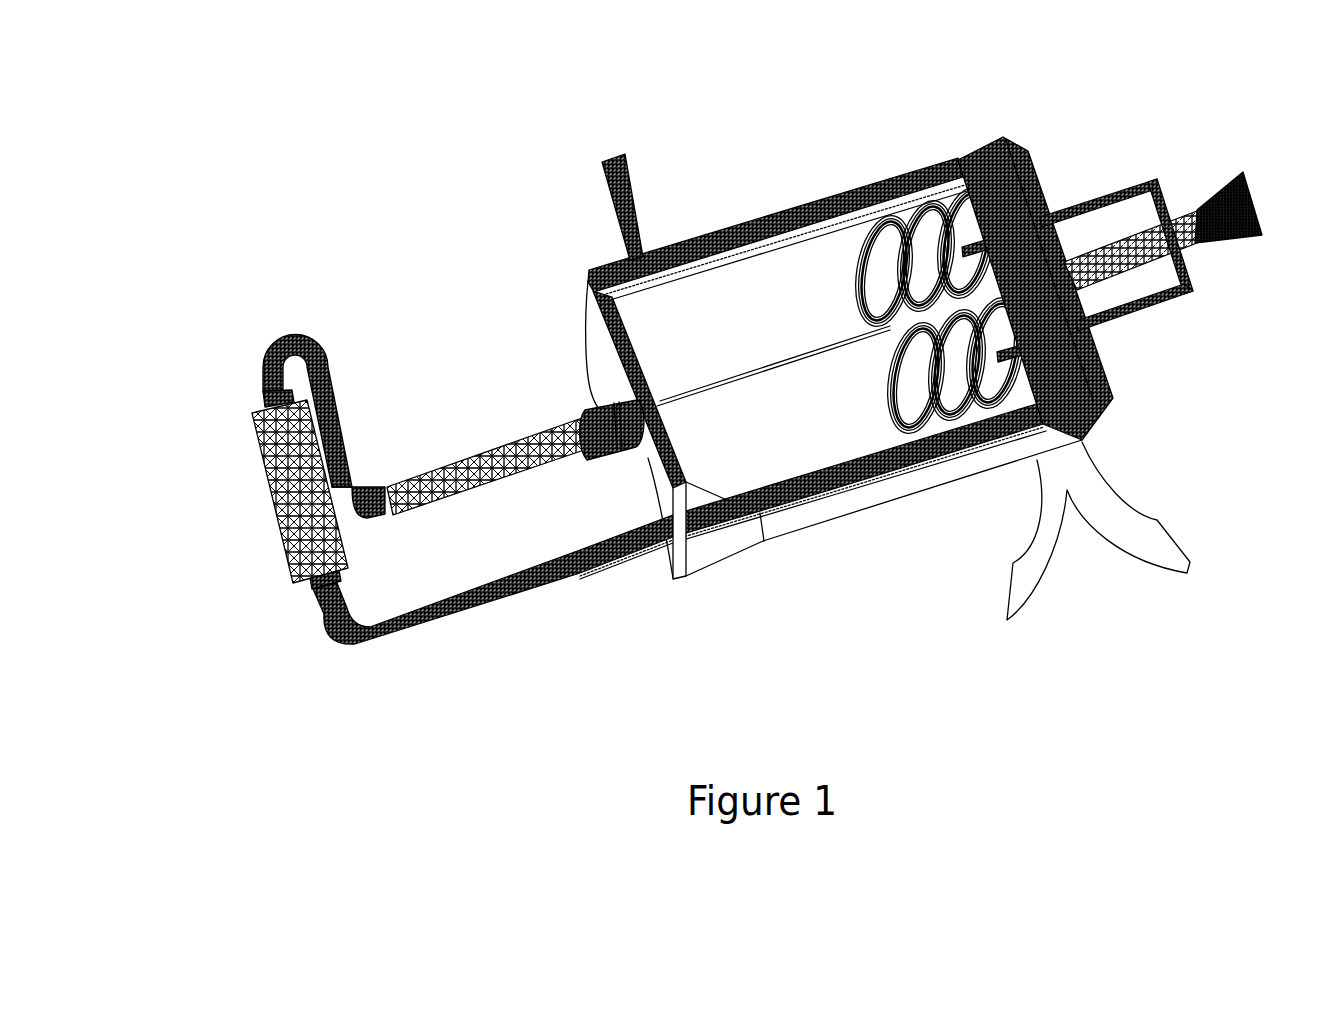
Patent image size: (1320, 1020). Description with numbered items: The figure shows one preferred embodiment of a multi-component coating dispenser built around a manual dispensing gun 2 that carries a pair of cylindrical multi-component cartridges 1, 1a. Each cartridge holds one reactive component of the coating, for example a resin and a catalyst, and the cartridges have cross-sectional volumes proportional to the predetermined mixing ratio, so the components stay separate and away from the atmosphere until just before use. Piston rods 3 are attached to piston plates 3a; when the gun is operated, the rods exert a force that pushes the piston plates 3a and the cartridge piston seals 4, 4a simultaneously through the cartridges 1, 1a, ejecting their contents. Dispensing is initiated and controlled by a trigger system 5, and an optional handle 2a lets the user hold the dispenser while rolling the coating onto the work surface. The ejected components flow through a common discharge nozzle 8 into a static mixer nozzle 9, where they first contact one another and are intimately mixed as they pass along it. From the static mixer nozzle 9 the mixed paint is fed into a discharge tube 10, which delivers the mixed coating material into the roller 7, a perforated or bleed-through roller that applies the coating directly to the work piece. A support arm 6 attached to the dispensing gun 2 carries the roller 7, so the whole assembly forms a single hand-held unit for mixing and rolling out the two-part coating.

The multi-component cartridge 1 is at (698, 452).
The multi-component cartridge 1a is at (629, 429).
The manual dispensing gun 2 is at (1010, 183).
The handle 2a is at (597, 190).
The piston rods 3 is at (1117, 298).
The piston plates 3a is at (942, 177).
The cartridge piston seal 4 is at (885, 356).
The cartridge piston seal 4a is at (992, 301).
The trigger system 5 is at (1052, 580).
The support arm 6 is at (485, 612).
The roller 7 is at (262, 485).
The common discharge nozzle 8 is at (635, 460).
The static mixer nozzle 9 is at (472, 442).
The discharge tube 10 is at (316, 326).